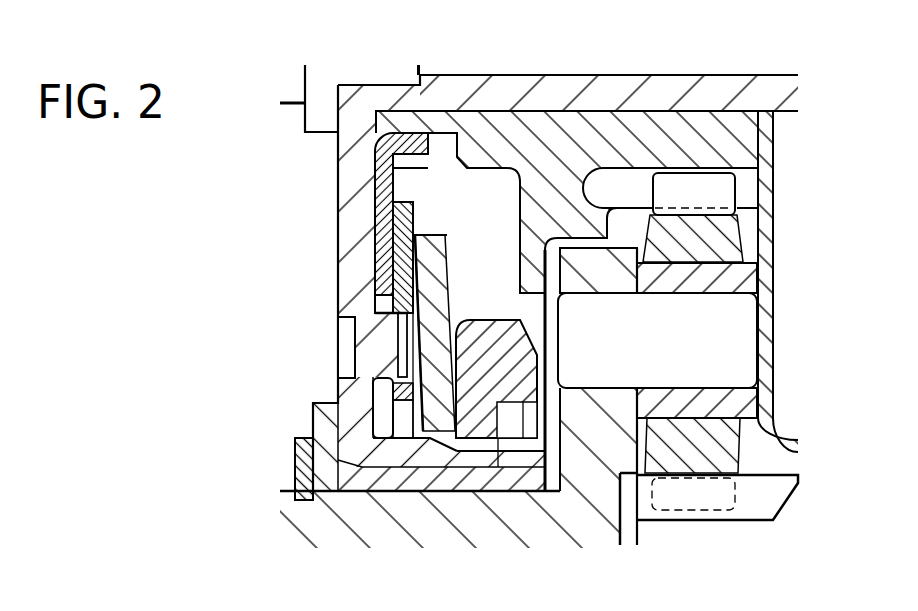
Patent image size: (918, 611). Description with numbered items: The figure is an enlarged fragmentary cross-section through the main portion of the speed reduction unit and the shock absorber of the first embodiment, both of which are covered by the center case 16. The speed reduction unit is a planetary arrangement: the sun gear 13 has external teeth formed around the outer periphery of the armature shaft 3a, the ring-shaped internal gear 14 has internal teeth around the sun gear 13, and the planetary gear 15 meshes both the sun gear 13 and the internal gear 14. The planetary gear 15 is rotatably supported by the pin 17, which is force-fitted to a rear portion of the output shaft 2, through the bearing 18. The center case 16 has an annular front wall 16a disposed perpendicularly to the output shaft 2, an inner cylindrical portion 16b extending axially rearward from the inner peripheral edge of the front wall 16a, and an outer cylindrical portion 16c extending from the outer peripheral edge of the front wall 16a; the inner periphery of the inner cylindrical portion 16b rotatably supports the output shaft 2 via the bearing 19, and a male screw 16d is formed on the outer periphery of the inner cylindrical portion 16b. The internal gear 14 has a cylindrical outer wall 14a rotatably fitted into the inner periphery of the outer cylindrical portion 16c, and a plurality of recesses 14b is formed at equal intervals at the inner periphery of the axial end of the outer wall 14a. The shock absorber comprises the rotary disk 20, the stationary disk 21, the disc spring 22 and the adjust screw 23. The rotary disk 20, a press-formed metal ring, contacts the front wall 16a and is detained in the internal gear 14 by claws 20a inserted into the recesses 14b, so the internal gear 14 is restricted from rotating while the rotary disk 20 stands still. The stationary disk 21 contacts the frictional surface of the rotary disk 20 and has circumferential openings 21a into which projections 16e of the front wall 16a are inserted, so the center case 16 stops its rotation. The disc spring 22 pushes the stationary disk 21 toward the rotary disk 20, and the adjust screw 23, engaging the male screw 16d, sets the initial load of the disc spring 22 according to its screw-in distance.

The output shaft 2 is at (333, 530).
The armature shaft 3a is at (672, 532).
The sun gear 13 is at (757, 510).
The internal gear 14 is at (586, 236).
The outer wall 14a is at (543, 123).
The recesses 14b is at (440, 142).
The planetary gear 15 is at (705, 183).
The center case 16 is at (530, 307).
The front wall 16a is at (352, 223).
The inner cylindrical portion 16b is at (405, 458).
The outer cylindrical portion 16c is at (610, 88).
The male screw 16d is at (520, 447).
The projections 16e is at (395, 348).
The pin 17 is at (737, 352).
The bearing 18 is at (737, 280).
The bearing 19 is at (457, 480).
The rotary disk 20 is at (345, 157).
The claws 20a is at (408, 140).
The stationary disk 21 is at (337, 289).
The openings 21a is at (378, 310).
The disc spring 22 is at (435, 408).
The adjust screw 23 is at (497, 333).